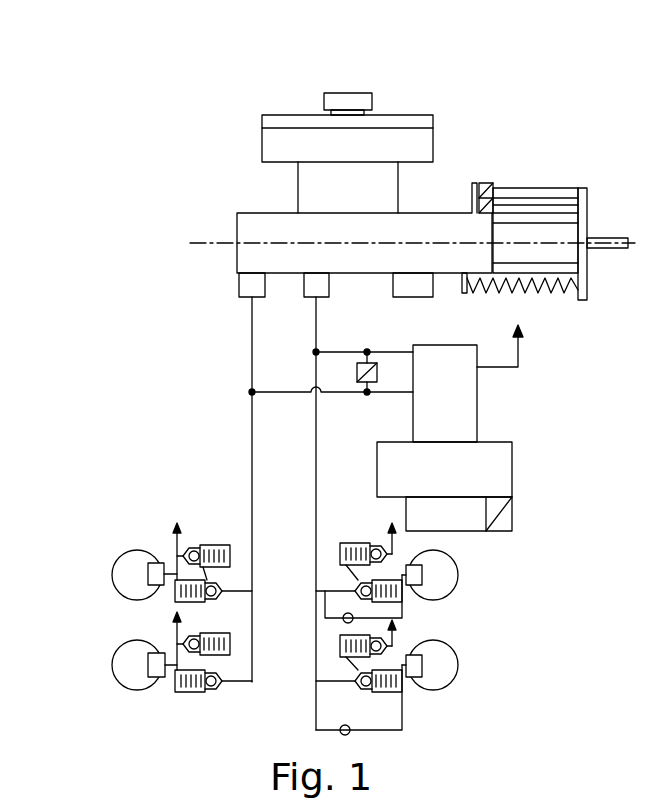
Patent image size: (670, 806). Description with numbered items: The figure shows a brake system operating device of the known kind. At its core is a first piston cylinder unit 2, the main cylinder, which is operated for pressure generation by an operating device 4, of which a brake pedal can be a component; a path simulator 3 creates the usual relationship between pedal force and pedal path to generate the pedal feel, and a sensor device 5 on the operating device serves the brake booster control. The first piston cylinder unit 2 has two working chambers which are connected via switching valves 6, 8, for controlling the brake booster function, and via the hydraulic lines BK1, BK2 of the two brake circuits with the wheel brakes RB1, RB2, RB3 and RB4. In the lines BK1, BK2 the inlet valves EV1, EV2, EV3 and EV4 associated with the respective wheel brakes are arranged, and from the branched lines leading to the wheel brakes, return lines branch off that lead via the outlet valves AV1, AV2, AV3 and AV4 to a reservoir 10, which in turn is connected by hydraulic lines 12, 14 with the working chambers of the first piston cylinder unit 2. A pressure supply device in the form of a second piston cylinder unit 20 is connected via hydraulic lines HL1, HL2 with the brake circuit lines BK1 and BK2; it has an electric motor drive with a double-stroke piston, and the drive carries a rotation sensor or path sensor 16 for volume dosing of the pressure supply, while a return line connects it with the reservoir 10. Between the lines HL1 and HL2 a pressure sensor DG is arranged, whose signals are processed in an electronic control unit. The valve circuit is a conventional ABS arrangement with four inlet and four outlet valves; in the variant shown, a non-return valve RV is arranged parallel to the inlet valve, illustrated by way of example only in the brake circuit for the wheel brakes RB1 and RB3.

The first piston cylinder unit 2 is at (256, 207).
The path simulator 3 is at (413, 285).
The operating device 4 is at (595, 226).
The sensor device 5 is at (538, 167).
The switching valve 6 is at (305, 283).
The switching valve 8 is at (240, 281).
The reservoir 10 is at (300, 114).
The hydraulic line 12 is at (398, 185).
The hydraulic line 14 is at (298, 185).
The rotation sensor/path sensor 16 is at (513, 502).
The second piston cylinder unit 20 is at (490, 430).
The hydraulic line HL1 is at (338, 352).
The hydraulic line HL2 is at (340, 398).
The pressure sensor DG is at (372, 393).
The hydraulic line, brake circuit BK1 is at (316, 485).
The hydraulic line, brake circuit BK2 is at (252, 428).
The wheel brake RB1 is at (443, 572).
The wheel brake RB2 is at (145, 573).
The wheel brake RB3 is at (443, 663).
The wheel brake RB4 is at (145, 664).
The inlet valve EV1 is at (359, 594).
The inlet valve EV2 is at (173, 597).
The inlet valve EV3 is at (371, 698).
The inlet valve EV4 is at (186, 693).
The outlet valve AV1 is at (339, 545).
The outlet valve AV2 is at (193, 551).
The outlet valve AV3 is at (397, 642).
The outlet valve AV4 is at (228, 624).
The non-return valve RV is at (330, 622).